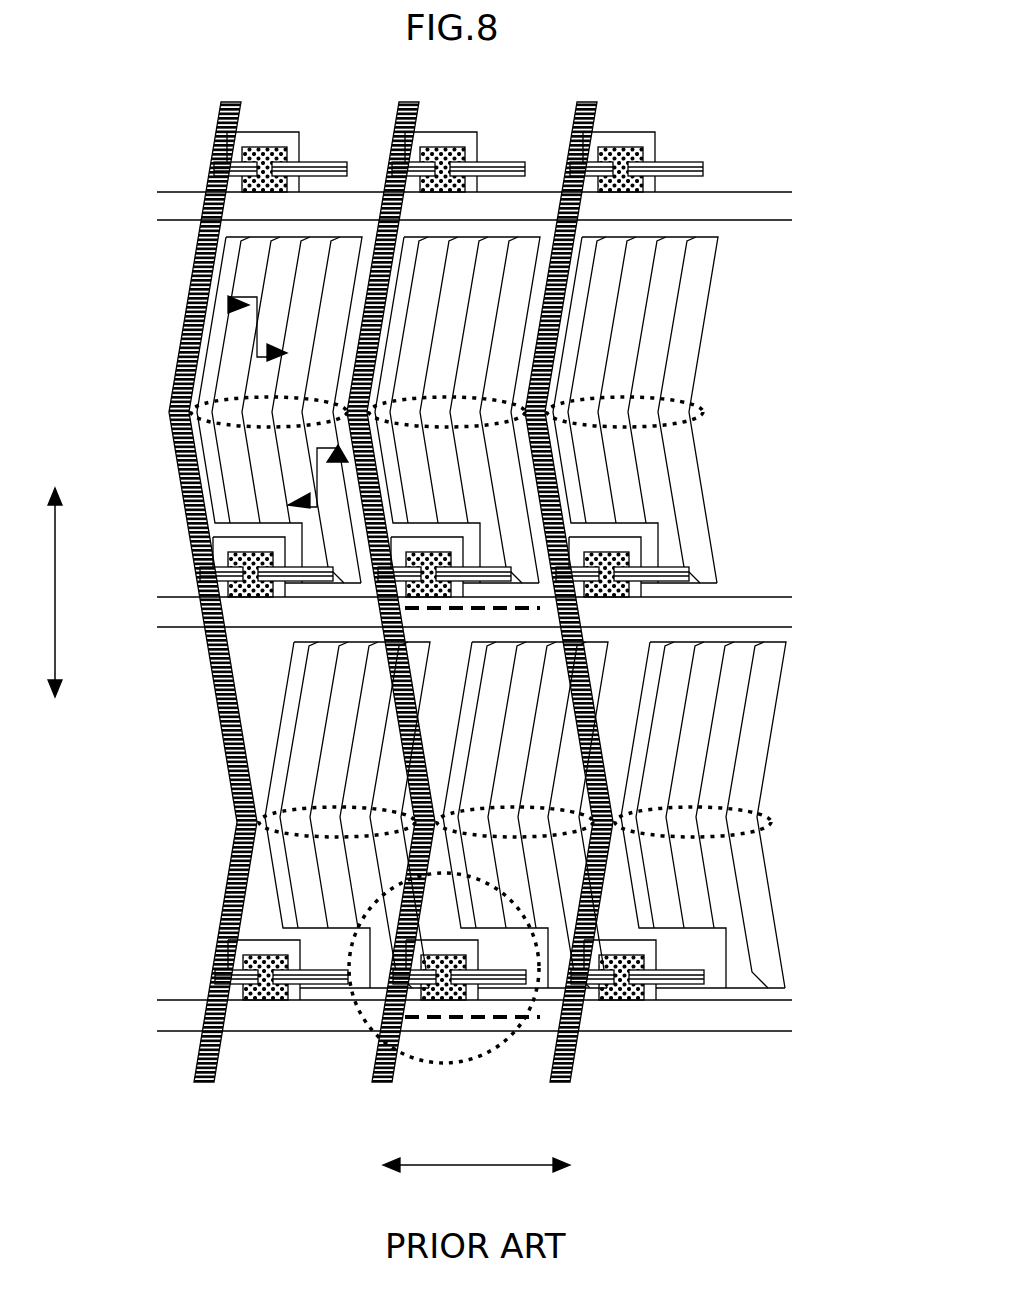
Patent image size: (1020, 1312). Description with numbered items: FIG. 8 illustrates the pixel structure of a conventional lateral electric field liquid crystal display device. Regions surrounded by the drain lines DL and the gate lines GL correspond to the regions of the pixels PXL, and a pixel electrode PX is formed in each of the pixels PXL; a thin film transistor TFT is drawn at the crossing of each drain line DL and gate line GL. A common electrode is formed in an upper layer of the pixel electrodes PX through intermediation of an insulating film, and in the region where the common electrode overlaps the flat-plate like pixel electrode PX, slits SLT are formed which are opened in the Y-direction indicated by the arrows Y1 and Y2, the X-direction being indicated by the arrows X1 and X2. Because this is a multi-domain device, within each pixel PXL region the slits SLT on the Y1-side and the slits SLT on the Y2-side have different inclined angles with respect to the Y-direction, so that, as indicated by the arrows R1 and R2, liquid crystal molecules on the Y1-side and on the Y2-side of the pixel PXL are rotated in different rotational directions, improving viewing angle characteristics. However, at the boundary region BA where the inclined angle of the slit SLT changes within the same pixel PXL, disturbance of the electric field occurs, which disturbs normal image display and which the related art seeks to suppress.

The gate line GL is at (797, 1012).
The drain line DL is at (372, 1070).
The thin film transistor TFT is at (452, 1047).
The pixel electrode PX is at (440, 705).
The slit SLT is at (483, 778).
The pixel PXL is at (585, 652).
The boundary region BA is at (232, 415).
The arrow R1 is at (228, 297).
The arrow R2 is at (317, 477).
The arrow X1 is at (451, 1168).
The arrow X2 is at (585, 1168).
The arrow Y1 is at (60, 708).
The arrow Y2 is at (60, 567).